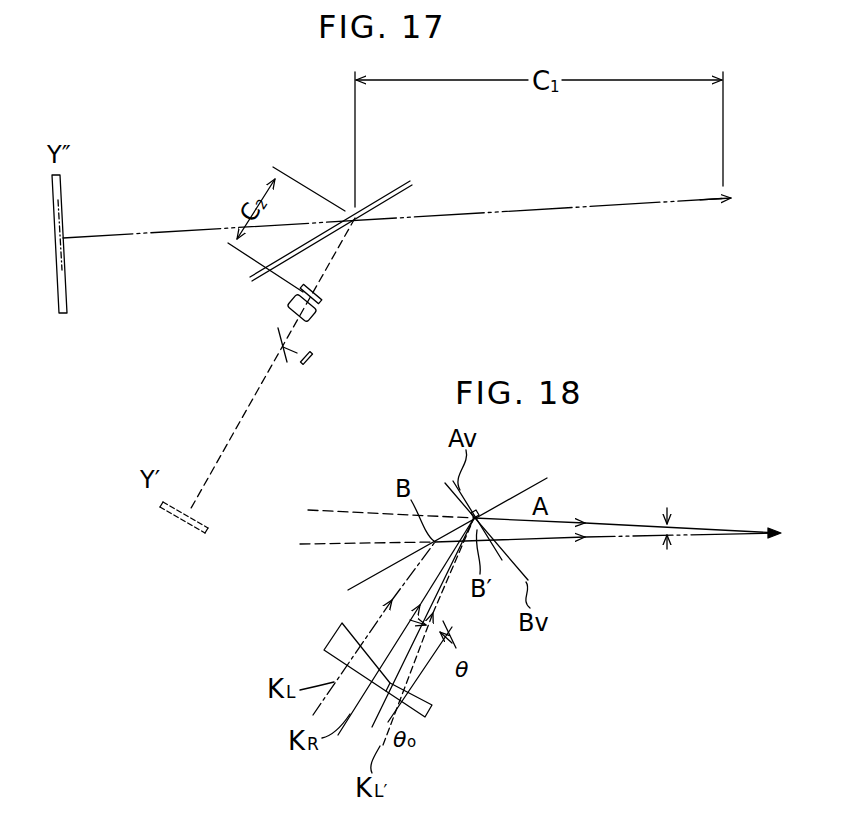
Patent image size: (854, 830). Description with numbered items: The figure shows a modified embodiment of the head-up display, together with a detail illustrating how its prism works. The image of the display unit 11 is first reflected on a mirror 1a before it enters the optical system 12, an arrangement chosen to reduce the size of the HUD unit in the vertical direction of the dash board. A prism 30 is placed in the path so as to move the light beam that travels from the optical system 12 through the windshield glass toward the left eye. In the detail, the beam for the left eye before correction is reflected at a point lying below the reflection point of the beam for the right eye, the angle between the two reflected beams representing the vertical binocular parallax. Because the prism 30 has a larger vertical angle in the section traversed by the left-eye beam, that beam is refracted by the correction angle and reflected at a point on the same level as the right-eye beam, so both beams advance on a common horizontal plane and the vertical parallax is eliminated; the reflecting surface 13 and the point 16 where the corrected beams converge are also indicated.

In FIG. 17, the half mirror 13 is at (398, 185).
In FIG. 18, the half mirror 13 is at (531, 487).
In FIG. 17, the prism 30 is at (321, 297).
In FIG. 18, the prism 30 is at (342, 624).
In FIG. 17, the optical system 12 is at (317, 316).
In FIG. 17, the mirror 1a is at (277, 338).
In FIG. 17, the display unit 11 is at (314, 366).
In FIG. 18, the focal point / image point 16 is at (775, 538).